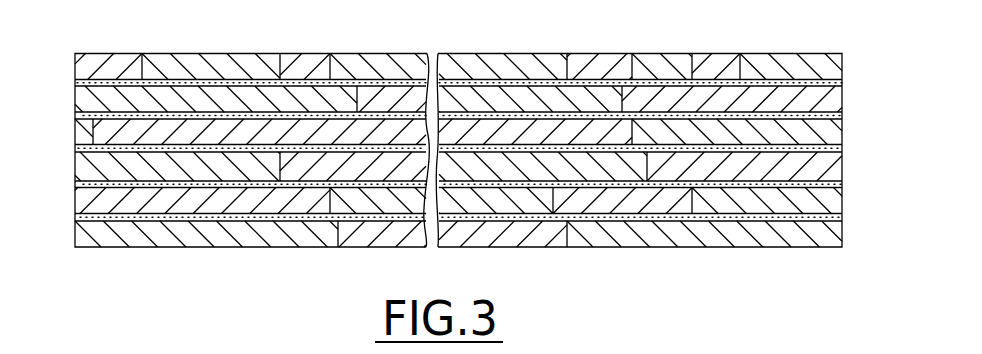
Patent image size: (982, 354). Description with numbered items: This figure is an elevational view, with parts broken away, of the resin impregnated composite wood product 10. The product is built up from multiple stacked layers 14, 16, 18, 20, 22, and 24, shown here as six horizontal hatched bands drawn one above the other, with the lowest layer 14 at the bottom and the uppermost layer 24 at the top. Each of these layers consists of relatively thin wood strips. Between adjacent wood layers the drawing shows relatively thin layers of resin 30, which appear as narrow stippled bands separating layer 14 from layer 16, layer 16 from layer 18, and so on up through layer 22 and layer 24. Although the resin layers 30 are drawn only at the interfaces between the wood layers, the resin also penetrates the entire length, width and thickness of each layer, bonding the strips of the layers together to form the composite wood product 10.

The resin impregnated composite wood product 10 is at (155, 272).
The layer 14 is at (823, 232).
The layer 16 is at (822, 198).
The layer 18 is at (823, 173).
The layer 20 is at (827, 130).
The layer 22 is at (830, 100).
The layer 24 is at (830, 66).
The layer of resin 30 is at (75, 115).